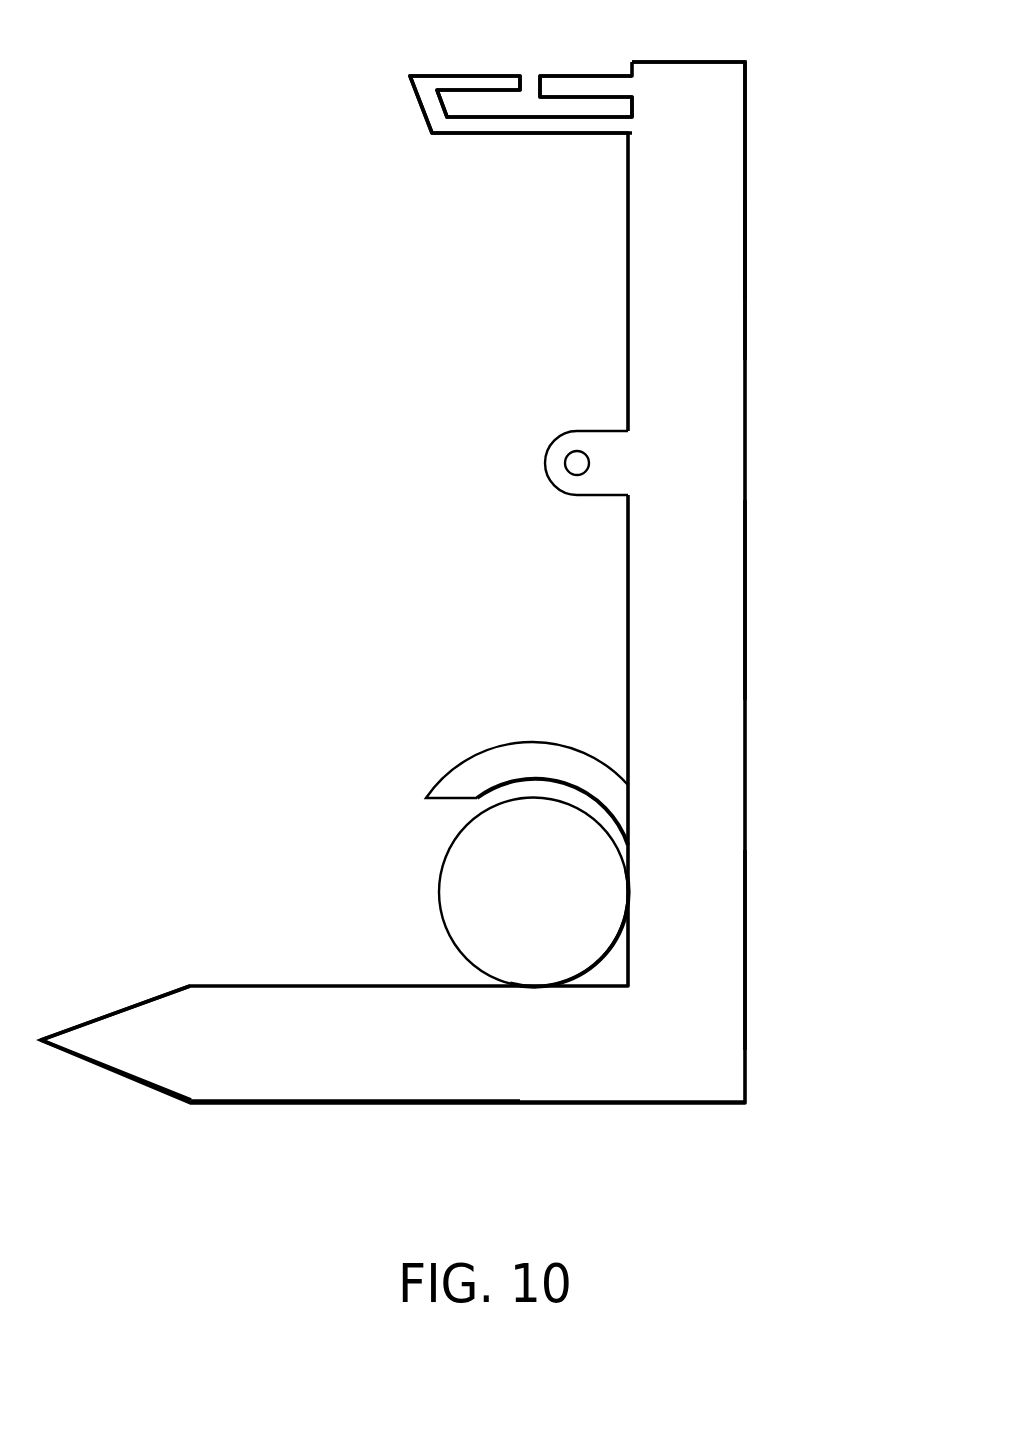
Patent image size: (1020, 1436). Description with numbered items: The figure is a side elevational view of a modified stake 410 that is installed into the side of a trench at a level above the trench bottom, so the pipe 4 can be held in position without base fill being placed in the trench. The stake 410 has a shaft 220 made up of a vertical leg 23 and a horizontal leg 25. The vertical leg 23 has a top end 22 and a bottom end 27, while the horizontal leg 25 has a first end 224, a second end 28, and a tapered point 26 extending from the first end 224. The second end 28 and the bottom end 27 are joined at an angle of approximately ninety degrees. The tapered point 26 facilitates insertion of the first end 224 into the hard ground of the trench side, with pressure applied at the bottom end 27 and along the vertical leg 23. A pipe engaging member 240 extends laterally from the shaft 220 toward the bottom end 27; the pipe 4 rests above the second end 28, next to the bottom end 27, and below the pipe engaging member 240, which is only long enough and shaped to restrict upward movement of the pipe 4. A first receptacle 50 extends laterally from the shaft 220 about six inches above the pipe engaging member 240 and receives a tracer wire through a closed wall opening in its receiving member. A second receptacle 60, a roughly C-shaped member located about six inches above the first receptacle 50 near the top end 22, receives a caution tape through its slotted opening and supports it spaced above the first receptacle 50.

The stake 410 is at (835, 452).
The top end 22 is at (727, 80).
The shaft 220 is at (727, 277).
The vertical leg 23 is at (727, 601).
The bottom end 27 is at (725, 940).
The tapered point 26 is at (120, 1048).
The first end 224 is at (260, 1077).
The horizontal leg 25 is at (440, 1082).
The second end 28 is at (608, 1082).
The second receptacle 60 is at (414, 58).
The first receptacle 50 is at (559, 416).
The pipe engaging member 240 is at (449, 750).
The pipe 4 is at (424, 895).